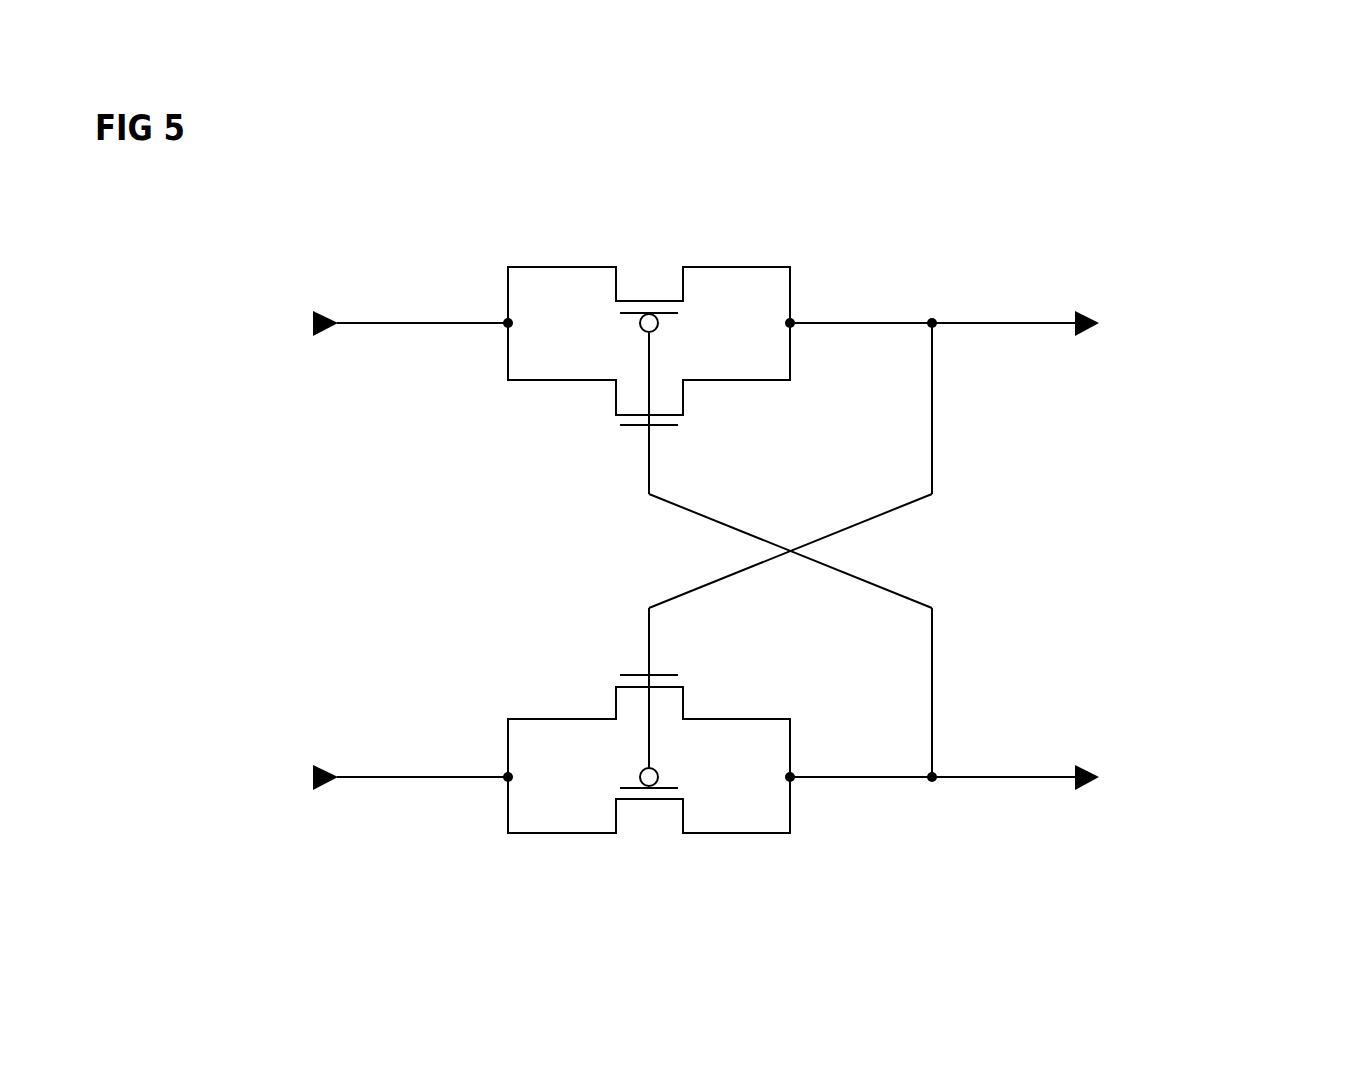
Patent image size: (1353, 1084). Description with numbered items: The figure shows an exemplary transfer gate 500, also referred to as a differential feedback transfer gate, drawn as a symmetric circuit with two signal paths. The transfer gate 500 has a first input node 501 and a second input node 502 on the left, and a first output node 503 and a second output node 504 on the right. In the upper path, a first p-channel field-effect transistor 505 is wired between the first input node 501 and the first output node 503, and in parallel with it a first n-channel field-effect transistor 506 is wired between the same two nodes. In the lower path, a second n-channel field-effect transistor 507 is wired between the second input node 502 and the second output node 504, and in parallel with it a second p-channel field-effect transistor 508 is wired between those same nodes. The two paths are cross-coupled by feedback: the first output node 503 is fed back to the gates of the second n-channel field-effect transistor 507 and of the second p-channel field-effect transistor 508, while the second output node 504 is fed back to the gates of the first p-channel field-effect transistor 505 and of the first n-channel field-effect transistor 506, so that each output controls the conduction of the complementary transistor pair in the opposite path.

The transfer gate 500 is at (1227, 143).
The first input node 501 is at (318, 312).
The second input node 502 is at (328, 770).
The first output node 503 is at (1082, 312).
The second output node 504 is at (1082, 766).
The first p-channel field-effect transistor 505 is at (643, 278).
The first n-channel field-effect transistor 506 is at (630, 433).
The second n-channel field-effect transistor 507 is at (637, 665).
The second p-channel field-effect transistor 508 is at (649, 832).